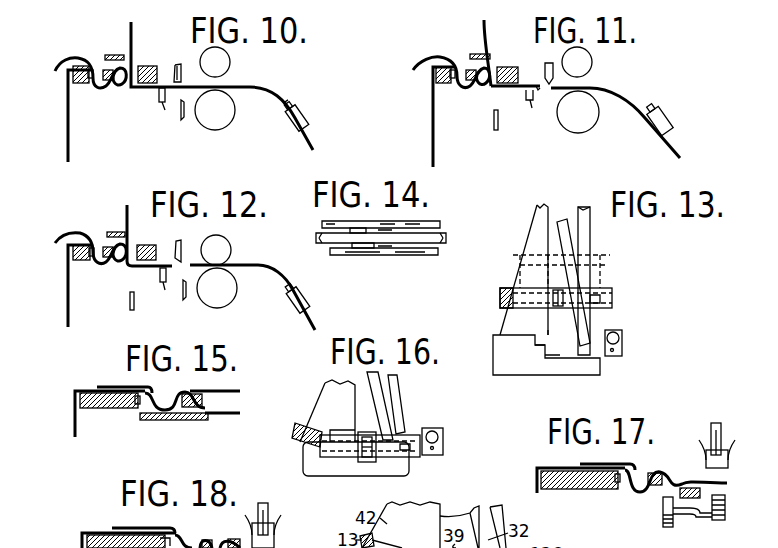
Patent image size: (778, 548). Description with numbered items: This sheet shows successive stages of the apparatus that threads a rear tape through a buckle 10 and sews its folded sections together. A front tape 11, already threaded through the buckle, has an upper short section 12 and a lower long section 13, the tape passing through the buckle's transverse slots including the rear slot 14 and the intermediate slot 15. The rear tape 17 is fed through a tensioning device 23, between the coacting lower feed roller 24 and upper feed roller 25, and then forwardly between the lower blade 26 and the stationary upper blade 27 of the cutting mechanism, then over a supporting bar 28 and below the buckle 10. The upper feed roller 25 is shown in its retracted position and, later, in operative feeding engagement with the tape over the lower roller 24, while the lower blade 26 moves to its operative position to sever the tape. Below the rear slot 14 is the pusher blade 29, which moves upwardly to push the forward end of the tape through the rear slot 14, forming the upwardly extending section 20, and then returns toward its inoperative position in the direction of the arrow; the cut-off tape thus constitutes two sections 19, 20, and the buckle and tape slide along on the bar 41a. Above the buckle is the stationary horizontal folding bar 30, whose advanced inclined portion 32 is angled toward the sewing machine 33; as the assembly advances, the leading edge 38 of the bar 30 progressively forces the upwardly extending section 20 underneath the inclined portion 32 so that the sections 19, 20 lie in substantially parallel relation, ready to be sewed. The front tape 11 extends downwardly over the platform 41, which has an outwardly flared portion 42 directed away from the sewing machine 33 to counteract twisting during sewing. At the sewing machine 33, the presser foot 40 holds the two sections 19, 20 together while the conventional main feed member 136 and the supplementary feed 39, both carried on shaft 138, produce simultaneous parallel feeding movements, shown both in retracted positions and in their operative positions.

In FIG. 10, the buckle 10 is at (143, 66).
In FIG. 11, the buckle 10 is at (507, 75).
In FIG. 12, the buckle 10 is at (146, 252).
In FIG. 13, the buckle 10 is at (548, 288).
In FIG. 16, the buckle 10 is at (366, 462).
In FIG. 17, the buckle 10 is at (665, 473).
In FIG. 18, the buckle 10 is at (181, 540).
In FIG. 11, the tape section 11 is at (429, 112).
In FIG. 12, the tape section 11 is at (66, 258).
In FIG. 13, the tape section 11 is at (497, 305).
In FIG. 10, the upper short section 12 is at (58, 64).
In FIG. 15, the upper short section 12 is at (105, 385).
In FIG. 16, the upper short section 12 is at (332, 457).
In FIG. 17, the upper short section 12 is at (615, 466).
In FIG. 18, the upper short section 12 is at (126, 527).
In FIG. 10, the lower long section 13 is at (66, 97).
In FIG. 15, the lower long section 13 is at (75, 403).
In FIG. 16, the lower long section 13 is at (300, 441).
In FIG. 17, the lower long section 13 is at (537, 478).
In FIG. 18, the lower long section 13 is at (80, 546).
In FIG. 13, the rear slot 14 is at (622, 323).
In FIG. 13, the intermediate slot 15 is at (496, 298).
In FIG. 10, the tape 17 is at (314, 146).
In FIG. 11, the tape 17 is at (679, 147).
In FIG. 12, the tape 17 is at (262, 267).
In FIG. 16, the tape 17 is at (288, 438).
In FIG. 11, the tape section 19 is at (509, 90).
In FIG. 14, the tape section 19 is at (360, 248).
In FIG. 15, the tape section 19 is at (238, 415).
In FIG. 17, the tape section 19 is at (720, 492).
In FIG. 18, the tape section 19 is at (238, 540).
In FIG. 10, the upper section 20 is at (133, 30).
In FIG. 11, the upper section 20 is at (492, 27).
In FIG. 12, the upper section 20 is at (126, 208).
In FIG. 14, the upper section 20 is at (345, 229).
In FIG. 13, the upper section 20 is at (613, 294).
In FIG. 15, the upper section 20 is at (239, 390).
In FIG. 16, the upper section 20 is at (408, 440).
In FIG. 17, the upper section 20 is at (720, 481).
In FIG. 10, the tensioning device 23 is at (306, 116).
In FIG. 11, the tensioning device 23 is at (671, 120).
In FIG. 12, the tensioning device 23 is at (308, 297).
In FIG. 10, the lower feed roller 24 is at (236, 110).
In FIG. 11, the lower feed roller 24 is at (595, 120).
In FIG. 12, the lower feed roller 24 is at (235, 296).
In FIG. 10, the upper feed roller 25 is at (231, 64).
In FIG. 11, the upper feed roller 25 is at (592, 64).
In FIG. 12, the upper feed roller 25 is at (231, 250).
In FIG. 10, the lower cutting blade 26 is at (183, 120).
In FIG. 11, the lower cutting blade 26 is at (553, 72).
In FIG. 12, the lower cutting blade 26 is at (184, 300).
In FIG. 10, the upper cutting blade 27 is at (180, 65).
In FIG. 11, the upper cutting blade 27 is at (545, 66).
In FIG. 12, the upper cutting blade 27 is at (181, 248).
In FIG. 10, the supporting bar 28 is at (163, 106).
In FIG. 11, the supporting bar 28 is at (531, 106).
In FIG. 12, the supporting bar 28 is at (163, 286).
In FIG. 10, the pusher blade 29 is at (128, 30).
In FIG. 11, the pusher blade 29 is at (494, 122).
In FIG. 12, the pusher blade 29 is at (129, 306).
In FIG. 10, the folding bar 30 is at (110, 55).
In FIG. 11, the folding bar 30 is at (480, 53).
In FIG. 12, the folding bar 30 is at (110, 231).
In FIG. 13, the folding bar 30 is at (568, 236).
In FIG. 15, the folding bar 30 is at (170, 390).
In FIG. 14, the advanced inclined portion 32 is at (428, 222).
In FIG. 13, the advanced inclined portion 32 is at (572, 278).
In FIG. 15, the advanced inclined portion 32 is at (200, 393).
In FIG. 16, the advanced inclined portion 32 is at (382, 403).
In FIG. 13, the sewing machine 33 is at (622, 352).
In FIG. 16, the sewing machine 33 is at (443, 440).
In FIG. 17, the sewing machine 33 is at (724, 434).
In FIG. 18, the sewing machine 33 is at (270, 514).
In FIG. 12, the leading edge 38 is at (129, 237).
In FIG. 13, the leading edge 38 is at (592, 262).
In FIG. 17, the supplementary feed 39 is at (663, 521).
In FIG. 17, the presser foot 40 is at (706, 460).
In FIG. 18, the presser foot 40 is at (276, 540).
In FIG. 10, the platform 41 is at (80, 84).
In FIG. 11, the platform 41 is at (447, 84).
In FIG. 12, the platform 41 is at (80, 261).
In FIG. 14, the platform 41 is at (443, 238).
In FIG. 13, the platform 41 is at (534, 239).
In FIG. 15, the platform 41 is at (105, 410).
In FIG. 16, the platform 41 is at (312, 463).
In FIG. 18, the platform 41 is at (128, 541).
In FIG. 14, the bar 41a is at (417, 256).
In FIG. 15, the bar 41a is at (190, 421).
In FIG. 13, the outwardly flared portion 42 is at (500, 323).
In FIG. 16, the outwardly flared portion 42 is at (326, 400).
In FIG. 17, the outwardly flared portion 42 is at (582, 489).
In FIG. 17, the conventional main feed member 136 is at (722, 520).
In FIG. 17, the shaft 138 is at (694, 520).